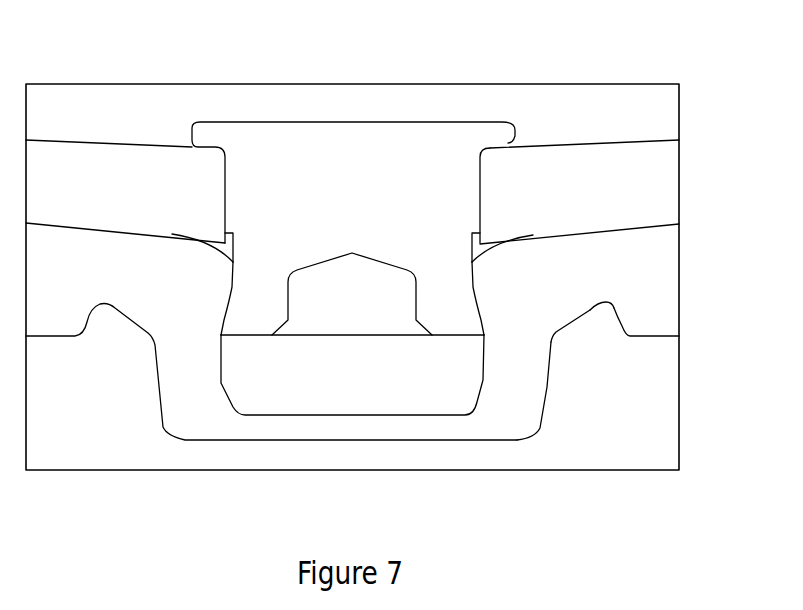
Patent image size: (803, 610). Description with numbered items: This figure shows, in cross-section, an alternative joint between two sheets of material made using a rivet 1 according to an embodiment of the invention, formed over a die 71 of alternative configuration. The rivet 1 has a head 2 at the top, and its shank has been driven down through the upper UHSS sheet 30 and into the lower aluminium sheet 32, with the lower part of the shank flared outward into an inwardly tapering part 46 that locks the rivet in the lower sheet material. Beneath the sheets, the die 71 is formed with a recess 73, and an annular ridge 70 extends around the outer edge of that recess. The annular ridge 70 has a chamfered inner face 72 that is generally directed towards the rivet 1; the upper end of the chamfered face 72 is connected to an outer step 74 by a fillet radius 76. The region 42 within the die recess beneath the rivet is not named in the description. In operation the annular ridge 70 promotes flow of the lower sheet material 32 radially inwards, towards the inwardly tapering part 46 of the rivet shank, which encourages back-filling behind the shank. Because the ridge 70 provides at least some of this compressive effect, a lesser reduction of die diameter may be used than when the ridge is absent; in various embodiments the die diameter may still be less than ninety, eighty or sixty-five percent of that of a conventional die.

The rivet 1 is at (340, 187).
The head 2 is at (210, 137).
The UHSS sheet 30 is at (643, 198).
The aluminium sheet 32 is at (637, 257).
The fill material 42 is at (404, 378).
The inwardly tapering part 46 is at (472, 275).
The annular ridge 70 is at (608, 327).
The die 71 is at (660, 406).
The chamfered inner face 72 is at (588, 313).
The recess 73 is at (517, 440).
The outer step 74 is at (618, 320).
The fillet radius 76 is at (610, 304).